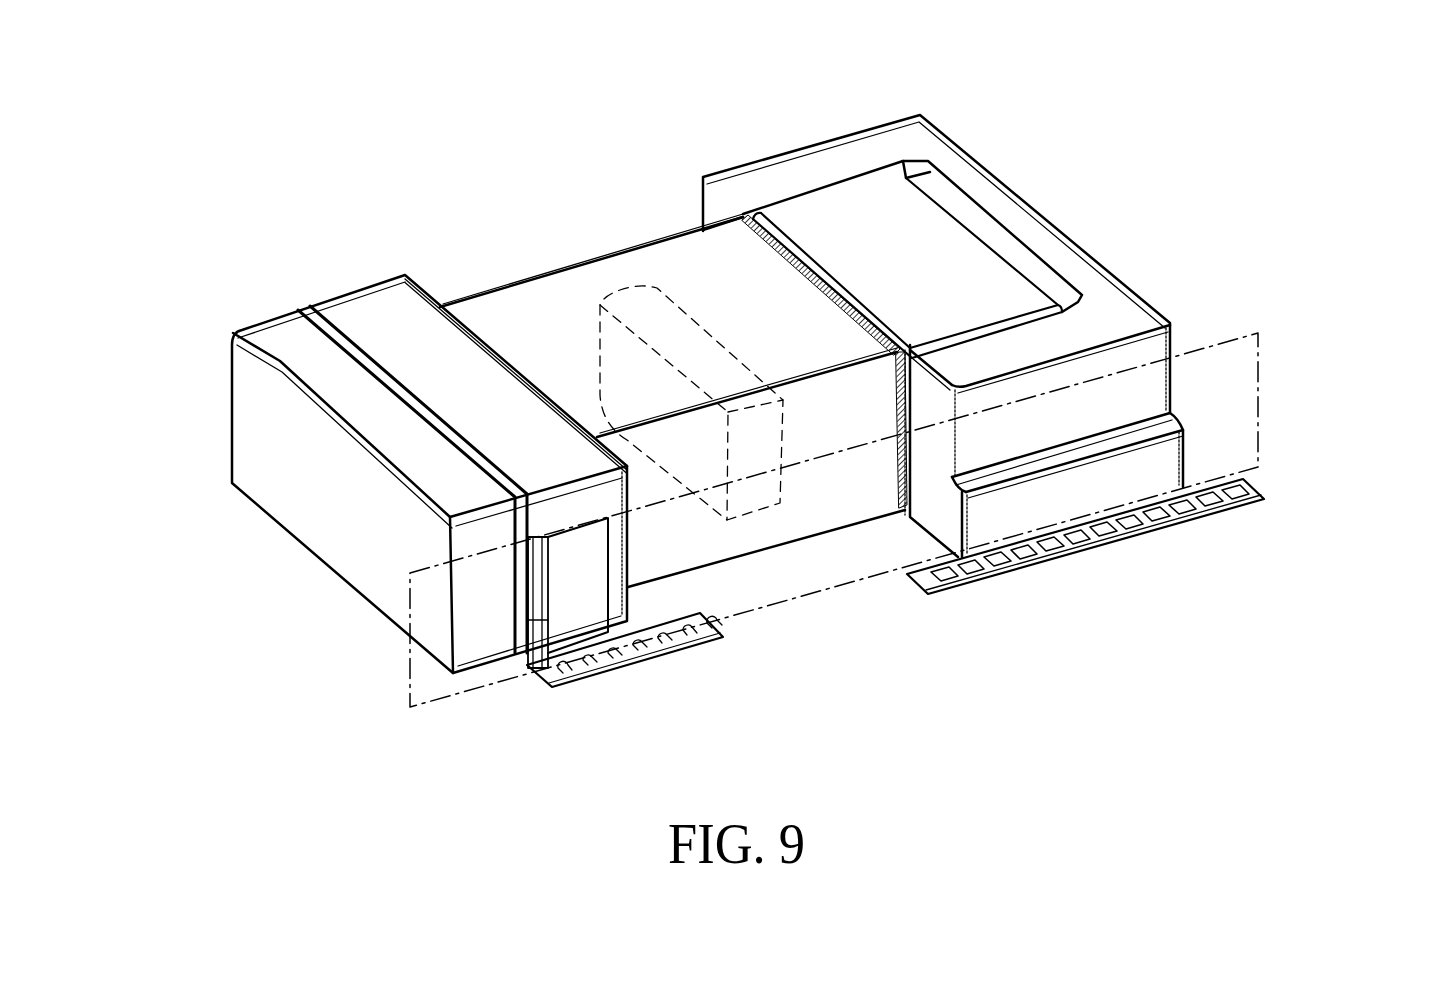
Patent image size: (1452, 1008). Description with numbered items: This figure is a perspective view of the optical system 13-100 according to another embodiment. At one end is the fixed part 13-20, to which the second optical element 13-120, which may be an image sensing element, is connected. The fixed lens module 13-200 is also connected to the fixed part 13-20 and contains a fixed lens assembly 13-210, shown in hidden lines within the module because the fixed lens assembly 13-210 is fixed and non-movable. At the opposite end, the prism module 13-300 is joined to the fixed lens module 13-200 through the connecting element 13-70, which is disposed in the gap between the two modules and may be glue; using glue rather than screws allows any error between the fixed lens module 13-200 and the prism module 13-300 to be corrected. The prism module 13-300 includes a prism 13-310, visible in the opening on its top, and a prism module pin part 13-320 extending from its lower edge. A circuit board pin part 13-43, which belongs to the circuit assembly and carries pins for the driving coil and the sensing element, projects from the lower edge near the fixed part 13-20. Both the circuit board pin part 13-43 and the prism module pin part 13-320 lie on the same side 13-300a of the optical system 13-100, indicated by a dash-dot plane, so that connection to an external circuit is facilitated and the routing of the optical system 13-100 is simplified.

The optical system 13-100 is at (192, 89).
The second optical element 13-120 is at (272, 340).
The fixed part 13-20 is at (360, 310).
The fixed lens module 13-200 is at (495, 308).
The fixed lens assembly 13-210 is at (640, 290).
The connecting element 13-70 is at (782, 247).
The prism 13-310 is at (853, 216).
The prism module 13-300 is at (925, 138).
The side 13-300a is at (1258, 332).
The prism module pin part 13-320 is at (1263, 483).
The circuit board pin part 13-43 is at (723, 627).